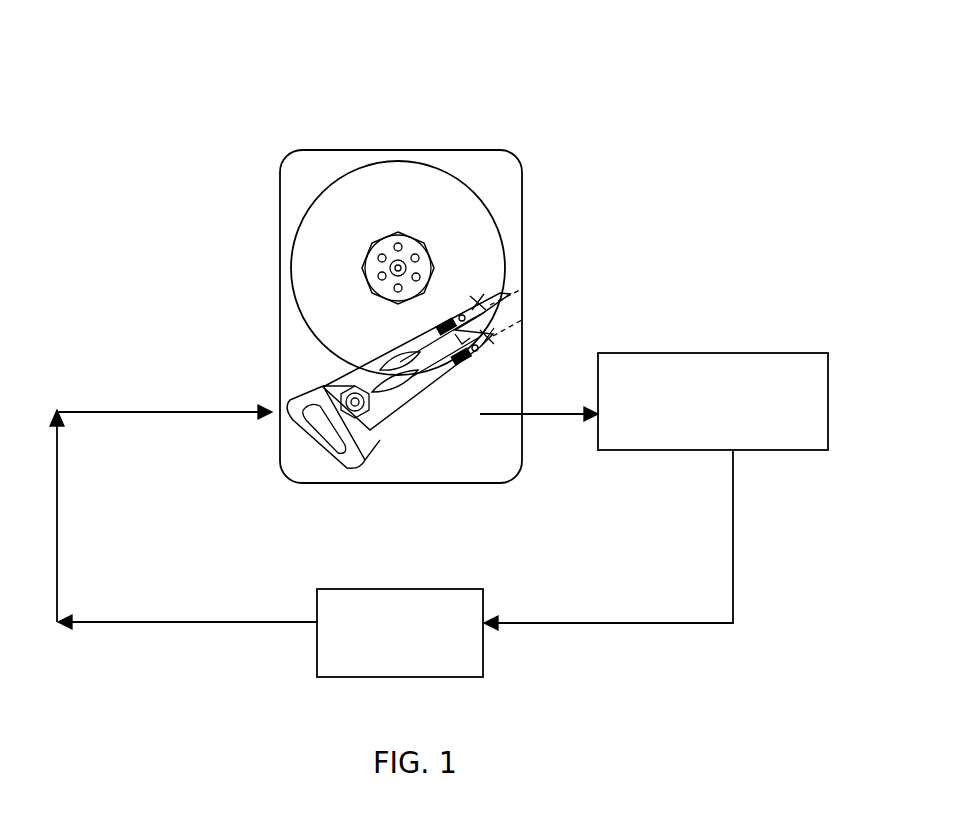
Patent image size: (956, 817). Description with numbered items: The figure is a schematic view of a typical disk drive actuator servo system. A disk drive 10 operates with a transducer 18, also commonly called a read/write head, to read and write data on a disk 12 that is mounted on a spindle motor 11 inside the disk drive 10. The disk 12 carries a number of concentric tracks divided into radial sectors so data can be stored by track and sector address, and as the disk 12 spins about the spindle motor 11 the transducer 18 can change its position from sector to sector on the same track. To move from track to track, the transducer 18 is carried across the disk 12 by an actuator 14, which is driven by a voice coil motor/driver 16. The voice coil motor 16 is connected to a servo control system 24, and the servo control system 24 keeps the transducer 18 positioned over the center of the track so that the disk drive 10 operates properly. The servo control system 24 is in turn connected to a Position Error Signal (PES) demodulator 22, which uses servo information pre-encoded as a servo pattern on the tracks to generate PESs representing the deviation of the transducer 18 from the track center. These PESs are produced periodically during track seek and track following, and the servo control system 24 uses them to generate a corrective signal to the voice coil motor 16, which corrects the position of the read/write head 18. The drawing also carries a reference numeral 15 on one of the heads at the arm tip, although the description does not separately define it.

The disk drive 10 is at (548, 82).
The spindle motor 11 is at (420, 256).
The disk 12 is at (408, 162).
The actuator 14 is at (363, 370).
The read/write head 15 is at (482, 300).
The voice coil motor/driver 16 is at (323, 383).
The transducer 18 is at (478, 304).
The Position Error Signal (PES) demodulator 22 is at (729, 392).
The servo control system 24 is at (415, 624).